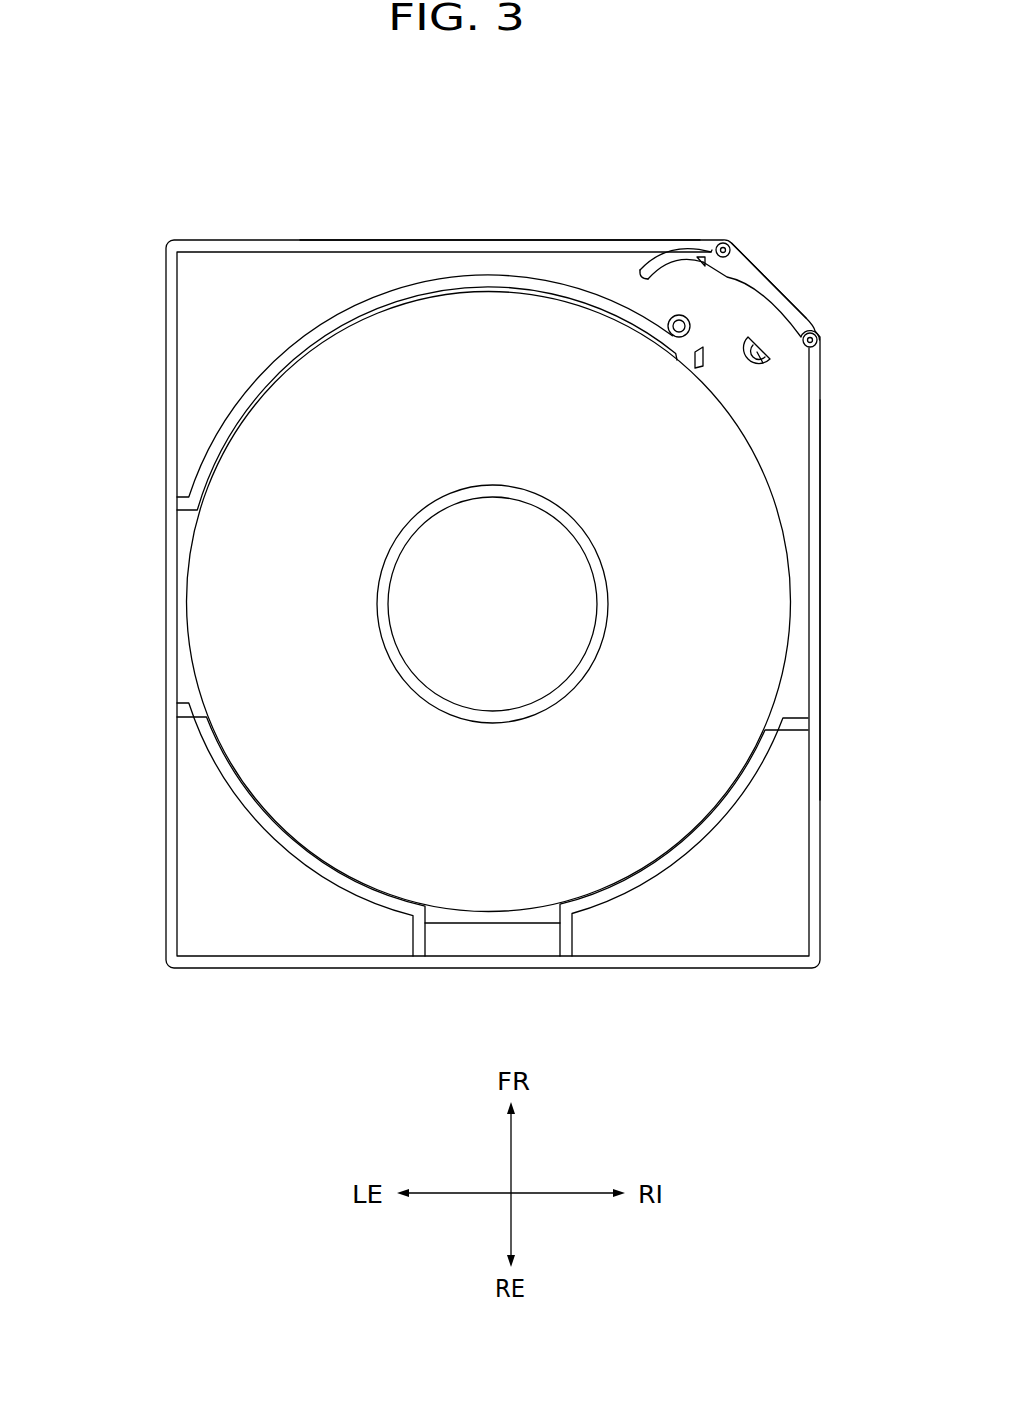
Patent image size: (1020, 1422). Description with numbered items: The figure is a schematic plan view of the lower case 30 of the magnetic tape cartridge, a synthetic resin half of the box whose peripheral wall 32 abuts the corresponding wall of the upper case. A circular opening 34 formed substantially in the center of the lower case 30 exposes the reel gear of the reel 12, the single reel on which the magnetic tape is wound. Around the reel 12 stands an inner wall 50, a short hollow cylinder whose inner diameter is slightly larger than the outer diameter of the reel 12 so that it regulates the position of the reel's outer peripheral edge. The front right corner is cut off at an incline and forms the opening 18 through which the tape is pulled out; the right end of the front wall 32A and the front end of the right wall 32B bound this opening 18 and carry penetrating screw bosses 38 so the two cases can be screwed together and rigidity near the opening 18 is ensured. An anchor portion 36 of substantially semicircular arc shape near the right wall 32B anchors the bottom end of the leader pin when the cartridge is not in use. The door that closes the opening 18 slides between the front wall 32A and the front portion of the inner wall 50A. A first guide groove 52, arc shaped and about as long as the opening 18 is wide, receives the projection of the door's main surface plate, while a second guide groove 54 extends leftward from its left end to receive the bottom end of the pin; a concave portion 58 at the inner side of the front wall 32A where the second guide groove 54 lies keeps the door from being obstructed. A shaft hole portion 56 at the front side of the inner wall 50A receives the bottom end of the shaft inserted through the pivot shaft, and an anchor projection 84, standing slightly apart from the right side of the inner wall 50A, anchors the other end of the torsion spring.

The reel 12 is at (791, 689).
The opening 18 is at (790, 269).
The lower case 30 is at (285, 158).
The peripheral wall 32 is at (153, 588).
The front wall 32A is at (532, 239).
The right wall 32B is at (823, 584).
The circular opening 34 is at (592, 585).
The anchor portion 36 is at (763, 366).
The screw boss 38 is at (735, 244).
The inner wall 50 is at (722, 833).
The inner wall 50A is at (378, 293).
The first guide groove 52 is at (790, 297).
The second guide groove 54 is at (680, 252).
The shaft hole portion 56 is at (673, 315).
The concave portion 58 is at (706, 256).
The anchor projection 84 is at (697, 369).